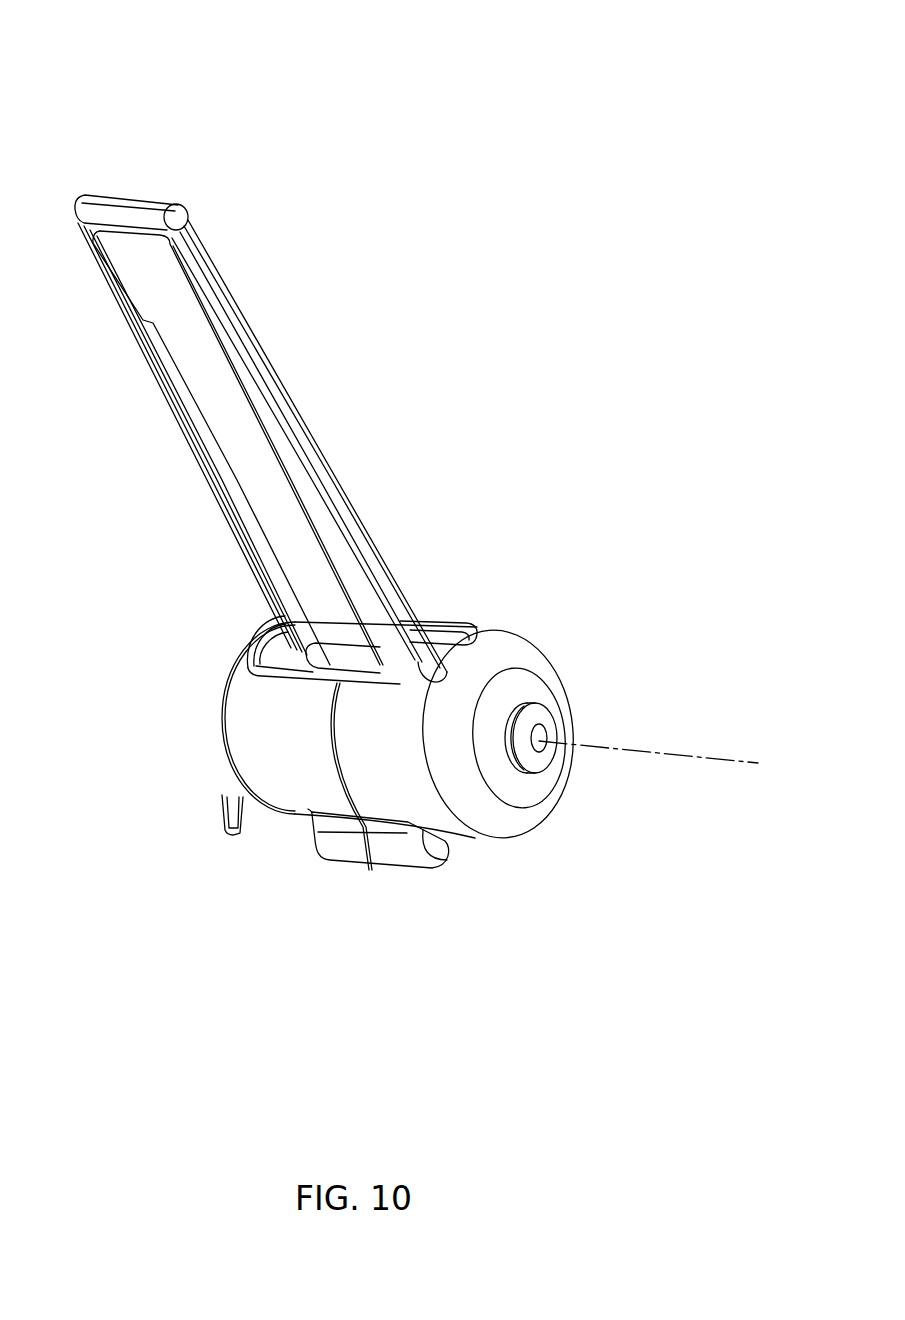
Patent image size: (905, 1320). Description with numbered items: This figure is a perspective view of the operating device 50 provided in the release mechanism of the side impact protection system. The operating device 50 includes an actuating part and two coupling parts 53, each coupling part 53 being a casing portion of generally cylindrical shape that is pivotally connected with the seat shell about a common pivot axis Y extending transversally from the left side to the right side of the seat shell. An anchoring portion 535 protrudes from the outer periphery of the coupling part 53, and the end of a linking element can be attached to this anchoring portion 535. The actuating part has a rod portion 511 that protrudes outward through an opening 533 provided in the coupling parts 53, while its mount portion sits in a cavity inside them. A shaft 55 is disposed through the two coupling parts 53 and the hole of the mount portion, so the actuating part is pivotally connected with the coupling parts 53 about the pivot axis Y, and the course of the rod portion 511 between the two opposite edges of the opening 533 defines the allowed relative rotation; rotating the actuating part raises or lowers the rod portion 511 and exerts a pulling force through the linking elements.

The operating device 50 is at (40, 53).
The rod portion 511 is at (395, 587).
The coupling part 53 is at (520, 685).
The opening 533 is at (280, 657).
The anchoring portion 535 is at (380, 850).
The shaft 55 is at (528, 745).
The pivot axis Y is at (647, 755).